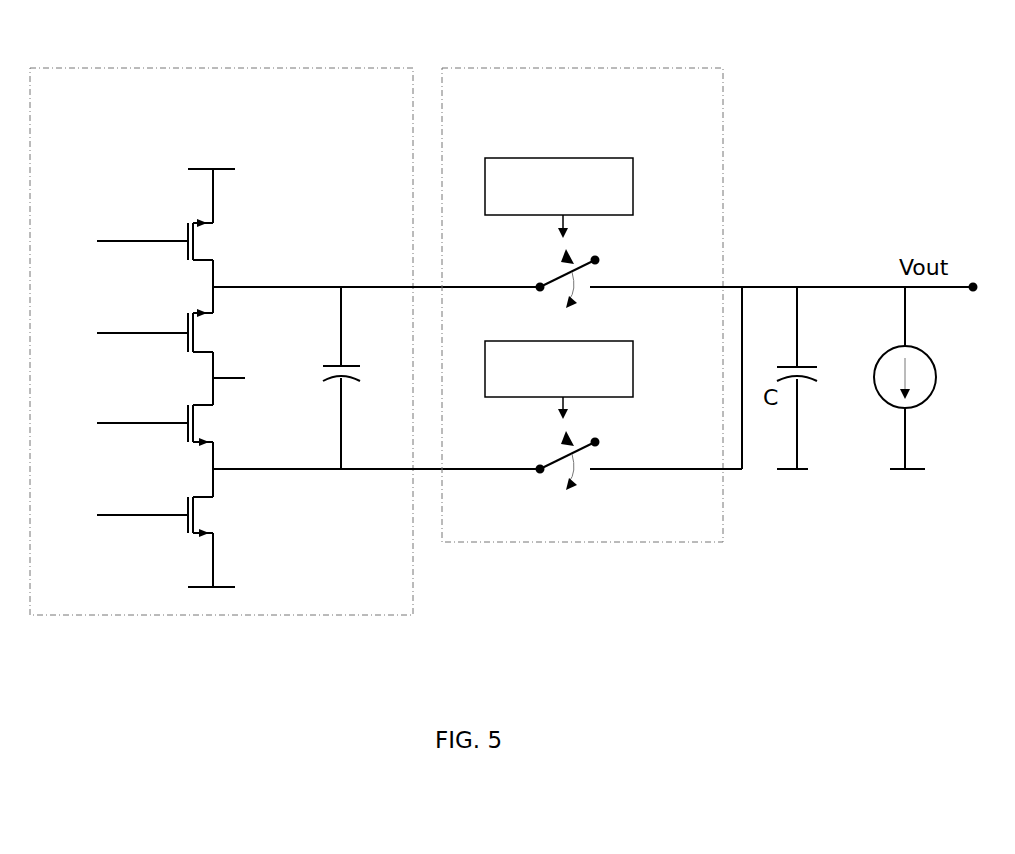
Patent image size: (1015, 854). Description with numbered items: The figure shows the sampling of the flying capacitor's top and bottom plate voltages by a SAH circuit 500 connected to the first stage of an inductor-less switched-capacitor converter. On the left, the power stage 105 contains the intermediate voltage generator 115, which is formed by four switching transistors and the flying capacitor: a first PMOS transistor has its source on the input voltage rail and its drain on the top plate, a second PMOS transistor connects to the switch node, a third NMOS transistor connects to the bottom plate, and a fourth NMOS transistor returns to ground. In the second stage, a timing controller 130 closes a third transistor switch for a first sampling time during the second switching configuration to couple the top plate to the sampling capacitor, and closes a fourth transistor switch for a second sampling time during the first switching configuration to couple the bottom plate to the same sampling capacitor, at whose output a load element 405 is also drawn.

The switched-capacitor intermediate voltage generator 115 is at (249, 68).
The SAH circuit 500 is at (600, 68).
The power stage 105 is at (280, 223).
The timing controller 130 is at (633, 193).
The load current source 405 is at (937, 382).